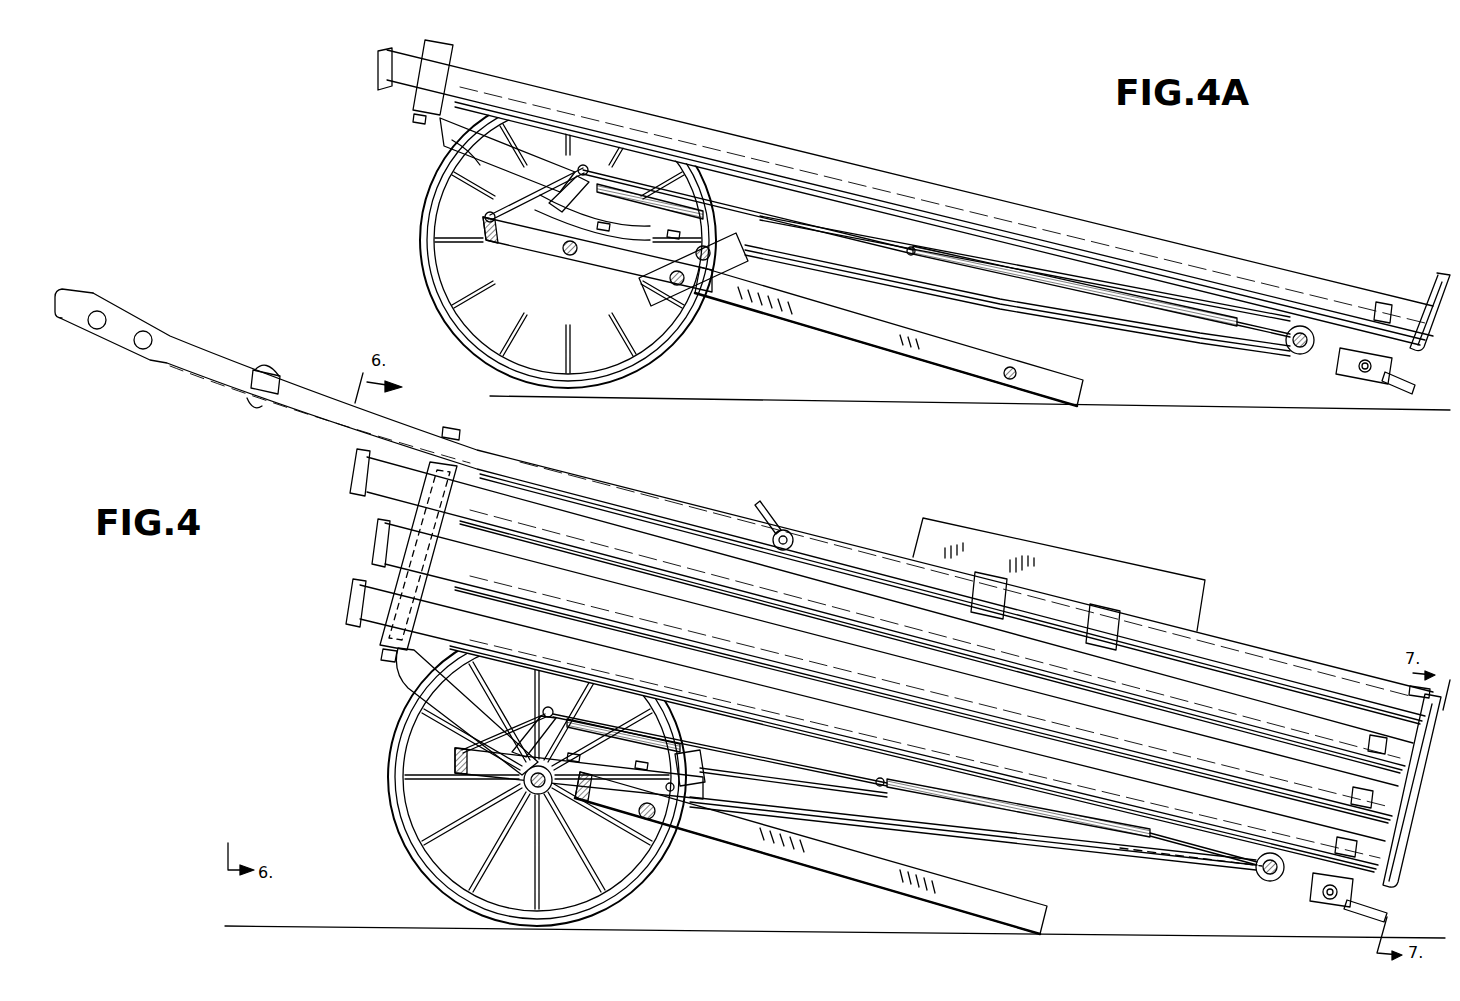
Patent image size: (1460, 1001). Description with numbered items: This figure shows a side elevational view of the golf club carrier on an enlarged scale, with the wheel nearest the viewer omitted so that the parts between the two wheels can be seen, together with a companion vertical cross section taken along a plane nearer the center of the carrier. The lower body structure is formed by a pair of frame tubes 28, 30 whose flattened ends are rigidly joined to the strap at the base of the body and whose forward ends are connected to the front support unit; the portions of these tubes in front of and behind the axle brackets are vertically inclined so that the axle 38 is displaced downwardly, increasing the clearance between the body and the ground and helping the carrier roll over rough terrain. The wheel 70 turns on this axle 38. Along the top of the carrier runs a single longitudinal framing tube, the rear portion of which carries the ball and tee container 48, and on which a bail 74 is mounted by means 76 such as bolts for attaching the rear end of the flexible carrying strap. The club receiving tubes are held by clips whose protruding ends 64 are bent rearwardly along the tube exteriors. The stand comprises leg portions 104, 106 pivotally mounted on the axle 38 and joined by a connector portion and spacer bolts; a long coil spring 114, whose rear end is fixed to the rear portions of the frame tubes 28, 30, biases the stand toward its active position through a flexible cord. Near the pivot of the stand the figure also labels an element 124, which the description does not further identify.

In FIG. 4, the frame tube 28 is at (946, 834).
In FIG. 4A, the frame tube 30 is at (1074, 330).
In FIG. 4A, the axle 38 is at (569, 257).
In FIG. 4, the ball and tee container 48 is at (1185, 600).
In FIG. 4, the protruding ends of the clip 64 is at (1367, 742).
In FIG. 4, the wheel 70 is at (391, 737).
In FIG. 4, the bail 74 is at (771, 506).
In FIG. 4, the mounting means 76 is at (790, 537).
In FIG. 4, the leg portion 104 is at (806, 875).
In FIG. 4A, the leg portion 106 is at (863, 348).
In FIG. 4A, the coil spring 114 is at (963, 253).
In FIG. 4, the coil spring 114 is at (880, 782).
In FIG. 4, the pivot knob 124 is at (543, 720).